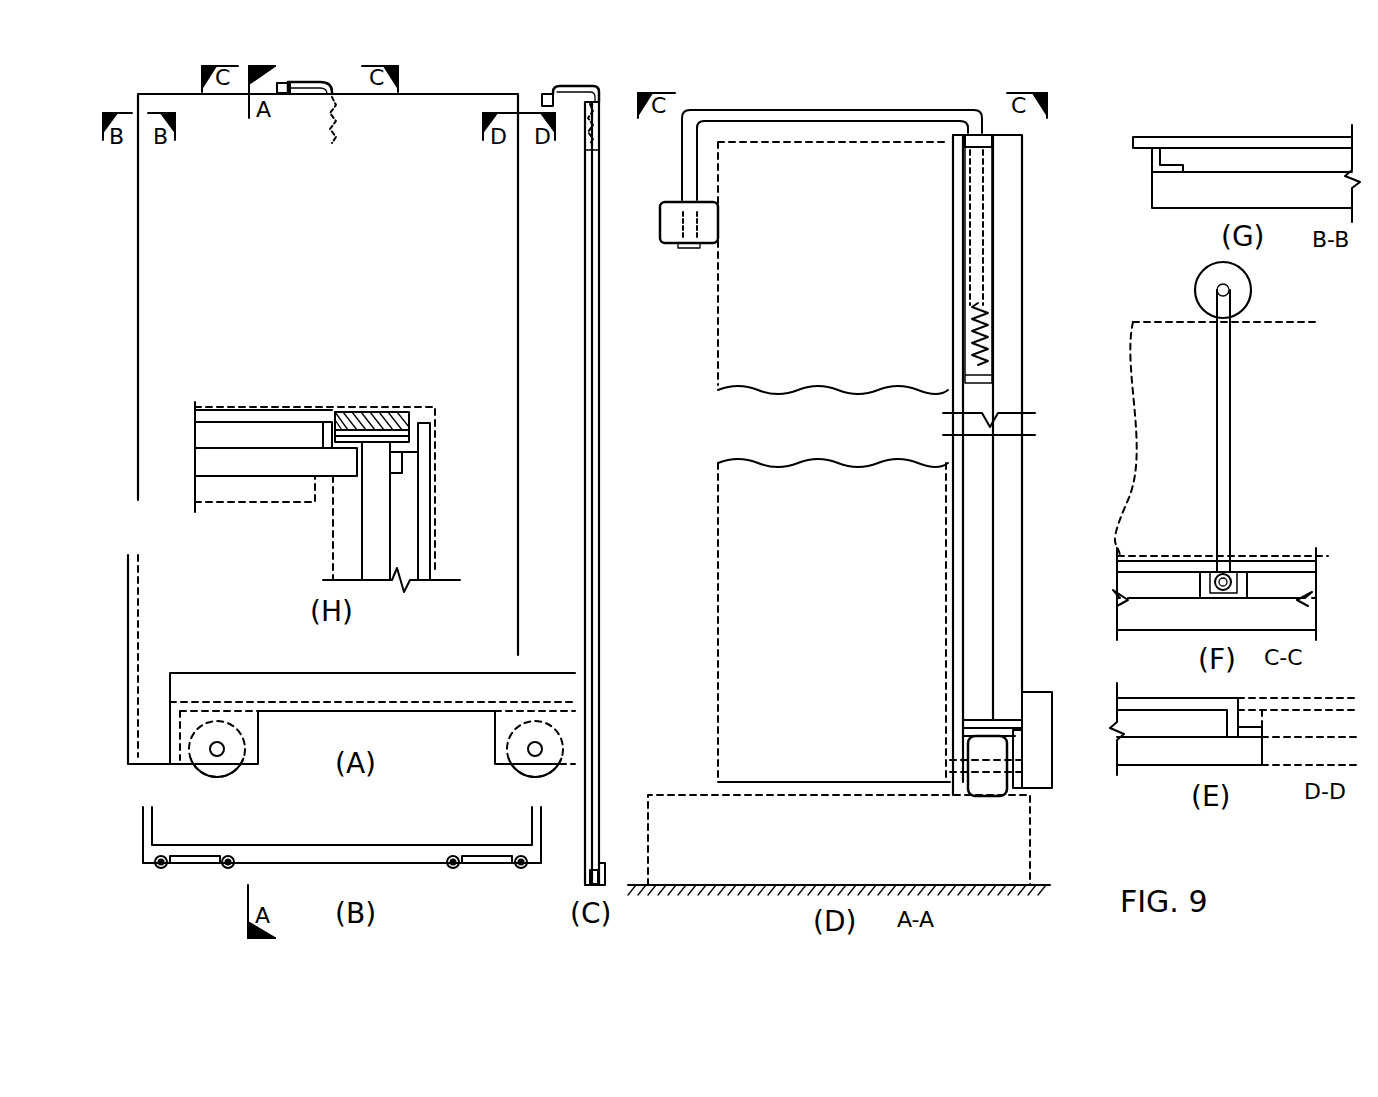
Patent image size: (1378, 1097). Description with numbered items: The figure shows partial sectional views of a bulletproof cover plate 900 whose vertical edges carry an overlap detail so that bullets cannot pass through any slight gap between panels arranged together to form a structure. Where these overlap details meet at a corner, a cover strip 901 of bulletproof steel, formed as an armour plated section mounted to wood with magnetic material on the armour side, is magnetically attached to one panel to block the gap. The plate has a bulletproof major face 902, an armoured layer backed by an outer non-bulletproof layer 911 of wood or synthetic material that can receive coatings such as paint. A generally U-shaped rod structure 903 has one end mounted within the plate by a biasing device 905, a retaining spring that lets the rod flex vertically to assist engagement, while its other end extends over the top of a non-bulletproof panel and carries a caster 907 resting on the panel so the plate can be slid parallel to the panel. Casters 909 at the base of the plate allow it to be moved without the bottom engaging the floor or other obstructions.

The bulletproof cover plate 900 is at (165, 340).
The cover strip 901 is at (352, 412).
The bulletproof major face 902 is at (262, 412).
The U-shaped rod structure 903 is at (307, 86).
The biasing device 905 is at (985, 355).
The caster 907 is at (540, 103).
The casters 909 is at (230, 768).
The outer non-bulletproof layer 911 is at (1035, 700).